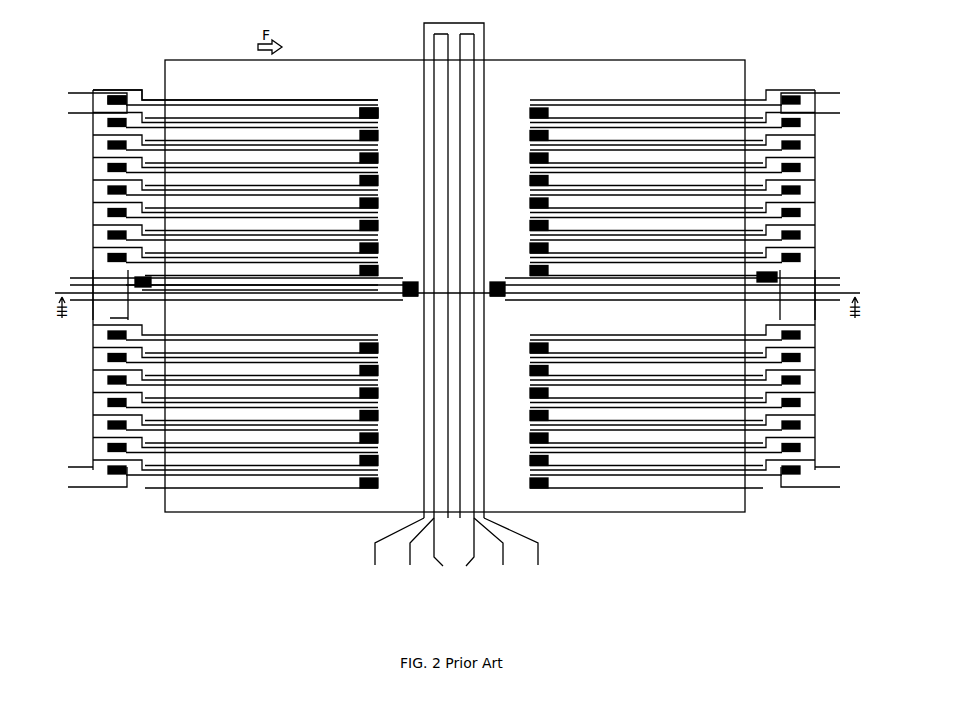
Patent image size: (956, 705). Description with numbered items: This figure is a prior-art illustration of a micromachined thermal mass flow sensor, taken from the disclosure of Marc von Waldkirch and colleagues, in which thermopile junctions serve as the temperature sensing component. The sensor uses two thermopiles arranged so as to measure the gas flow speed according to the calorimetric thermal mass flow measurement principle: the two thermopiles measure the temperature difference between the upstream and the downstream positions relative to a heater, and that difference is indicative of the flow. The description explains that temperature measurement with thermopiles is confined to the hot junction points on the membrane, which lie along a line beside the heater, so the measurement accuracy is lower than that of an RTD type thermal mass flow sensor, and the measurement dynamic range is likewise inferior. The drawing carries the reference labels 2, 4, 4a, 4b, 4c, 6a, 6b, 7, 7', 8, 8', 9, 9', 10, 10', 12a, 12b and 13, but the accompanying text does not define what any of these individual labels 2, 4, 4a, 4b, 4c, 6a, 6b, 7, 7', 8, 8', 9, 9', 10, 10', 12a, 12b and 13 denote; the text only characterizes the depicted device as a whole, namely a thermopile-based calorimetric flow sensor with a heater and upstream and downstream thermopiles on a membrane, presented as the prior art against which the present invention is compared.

The substrate frame 2 is at (604, 60).
The movable beam 4 is at (456, 287).
The beam outer portion 4a is at (425, 107).
The beam inner rail 4b is at (453, 80).
The beam inner rail 4c is at (475, 90).
The left electrode array 6a is at (221, 89).
The right electrode array 6b is at (678, 84).
The fixed electrode 7 is at (235, 83).
The fixed electrode 7' is at (260, 162).
The connection pad 8 is at (121, 81).
The movable electrode 8' is at (252, 159).
The electrode pad 9 is at (362, 75).
The central electrode pad 9' is at (448, 269).
The terminal pad 10 is at (97, 277).
The terminal pad 10' is at (451, 256).
The stopper 12a is at (408, 311).
The stopper 12b is at (511, 311).
The connection electrode 13 is at (87, 273).